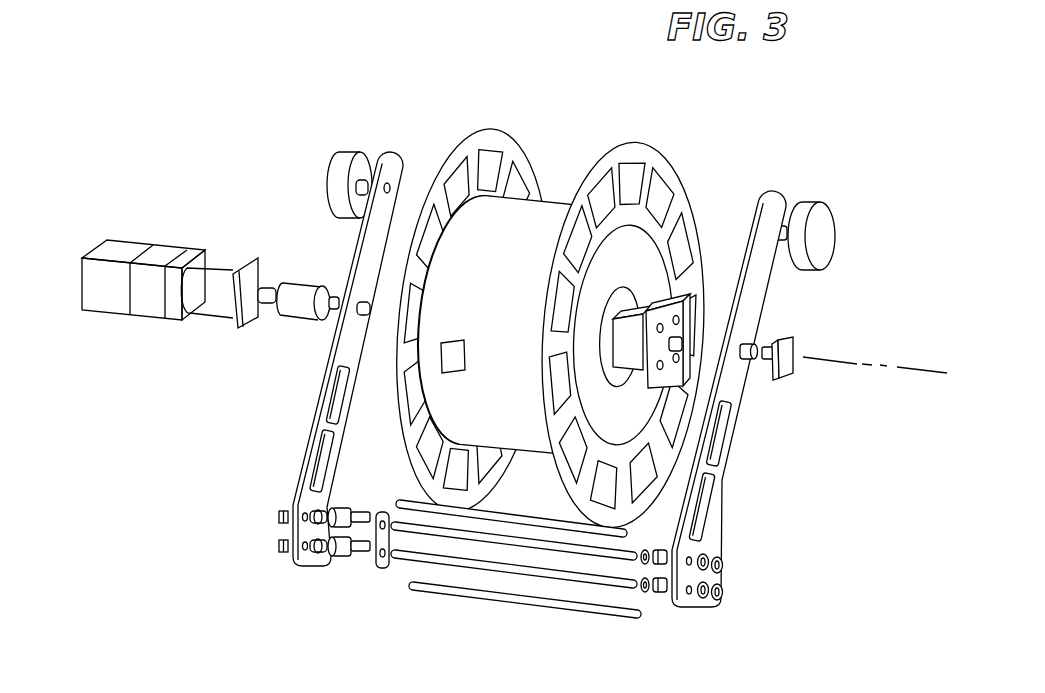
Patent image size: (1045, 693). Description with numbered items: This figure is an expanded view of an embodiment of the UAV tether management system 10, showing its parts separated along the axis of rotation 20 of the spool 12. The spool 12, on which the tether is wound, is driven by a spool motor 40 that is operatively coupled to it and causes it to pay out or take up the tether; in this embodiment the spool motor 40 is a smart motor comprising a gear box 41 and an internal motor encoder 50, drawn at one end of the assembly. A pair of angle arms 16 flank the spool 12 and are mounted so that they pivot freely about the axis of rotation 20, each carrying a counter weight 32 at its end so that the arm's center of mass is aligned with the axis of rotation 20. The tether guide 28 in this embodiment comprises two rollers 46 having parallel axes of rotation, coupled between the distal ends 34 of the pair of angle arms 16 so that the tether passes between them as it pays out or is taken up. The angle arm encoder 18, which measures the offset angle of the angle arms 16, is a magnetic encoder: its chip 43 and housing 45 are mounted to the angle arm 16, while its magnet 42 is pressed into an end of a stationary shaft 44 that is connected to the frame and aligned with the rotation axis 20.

The UAV tether management system 10 is at (255, 84).
The spool 12 is at (493, 135).
The angle arm 16 is at (315, 420).
The angle arm encoder 18 is at (790, 353).
The axis of rotation 20 is at (886, 367).
The tether guide 28 is at (270, 482).
The counter weight 32 is at (340, 168).
The distal end 34 is at (340, 572).
The spool motor 40 is at (157, 253).
The gear box 41 is at (217, 277).
The magnet 42 is at (680, 312).
The chip 43 is at (756, 356).
The stationary shaft 44 is at (678, 366).
The housing 45 is at (772, 347).
The rollers 46 is at (547, 527).
The internal motor encoder 50 is at (95, 290).